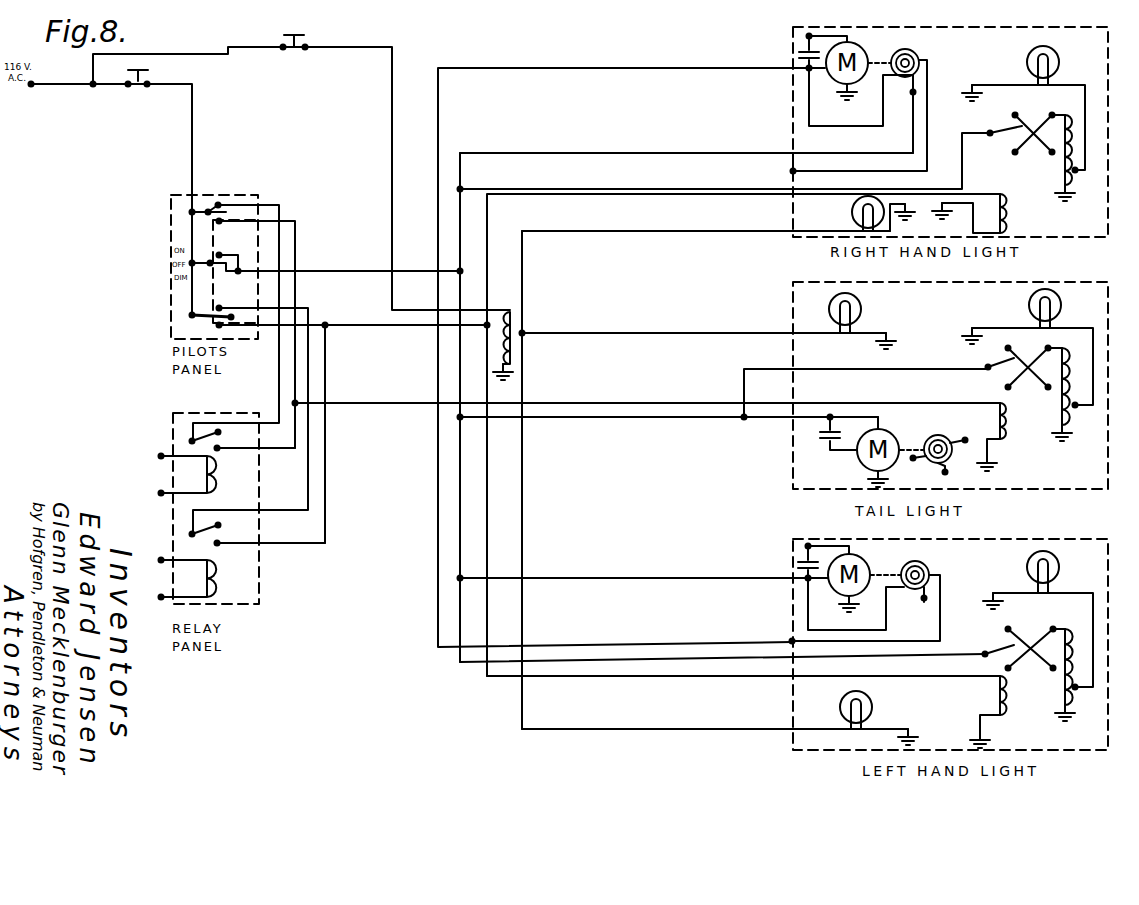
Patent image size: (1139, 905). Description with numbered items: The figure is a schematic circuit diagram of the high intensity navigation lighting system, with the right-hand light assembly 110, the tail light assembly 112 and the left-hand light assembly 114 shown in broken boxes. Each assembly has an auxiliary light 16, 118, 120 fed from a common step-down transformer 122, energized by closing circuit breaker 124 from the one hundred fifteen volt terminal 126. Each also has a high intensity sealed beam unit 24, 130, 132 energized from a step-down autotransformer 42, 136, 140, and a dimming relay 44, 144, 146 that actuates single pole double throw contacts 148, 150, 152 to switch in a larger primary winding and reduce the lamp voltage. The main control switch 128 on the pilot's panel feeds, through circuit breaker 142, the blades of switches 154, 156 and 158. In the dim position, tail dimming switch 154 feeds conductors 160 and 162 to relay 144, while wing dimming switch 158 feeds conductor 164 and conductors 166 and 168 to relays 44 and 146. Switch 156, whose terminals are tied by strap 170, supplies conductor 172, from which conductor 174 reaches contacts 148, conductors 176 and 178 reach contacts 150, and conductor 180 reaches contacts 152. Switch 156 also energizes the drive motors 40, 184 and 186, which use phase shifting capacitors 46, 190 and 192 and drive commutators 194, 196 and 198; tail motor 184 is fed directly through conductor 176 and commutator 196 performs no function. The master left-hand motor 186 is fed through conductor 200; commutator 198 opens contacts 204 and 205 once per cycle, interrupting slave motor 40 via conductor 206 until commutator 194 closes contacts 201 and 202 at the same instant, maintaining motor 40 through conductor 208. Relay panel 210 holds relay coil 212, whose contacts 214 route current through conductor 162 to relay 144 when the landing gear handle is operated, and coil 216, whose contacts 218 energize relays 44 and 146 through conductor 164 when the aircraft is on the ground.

The auxiliary light 16 is at (854, 204).
The high intensity sealed beam unit 24 is at (1052, 50).
The drive motor 40 is at (869, 50).
The step down autotransformer 42 is at (1080, 112).
The dimming relay 44 is at (1012, 196).
The phase shifting capacitor 46 is at (797, 48).
The right-hand light assembly 110 is at (935, 27).
The tail light assembly 112 is at (1000, 282).
The left-hand light assembly 114 is at (1025, 539).
The auxiliary light 118 is at (828, 318).
The auxiliary light 120 is at (838, 703).
The step-down transformer 122 is at (511, 309).
The circuit breaker 124 is at (316, 43).
The terminal 126 is at (31, 92).
The main control switch 128 is at (210, 195).
The high intensity sealed beam unit 130 is at (1028, 312).
The high intensity sealed beam unit 132 is at (1058, 575).
The step down autotransformer 136 is at (1082, 335).
The step down autotransformer 140 is at (1082, 616).
The circuit breaker 142 is at (135, 92).
The dimming relay 144 is at (1009, 437).
The dimming relay 146 is at (1005, 692).
The single pole double throw contacts 148 is at (1010, 134).
The single pole double throw contacts 150 is at (996, 371).
The single pole double throw contacts 152 is at (990, 646).
The tail dimming switch 154 is at (225, 202).
The center switch 156 is at (238, 244).
The wing dimming switch 158 is at (240, 295).
The conductor 160 is at (297, 292).
The conductor 162 is at (625, 399).
The conductor 164 is at (372, 334).
The conductor 166 is at (577, 210).
The conductor 168 is at (583, 679).
The strap 170 is at (240, 262).
The conductor 172 is at (330, 270).
The conductor 174 is at (620, 188).
The conductor 176 is at (584, 420).
The conductor 178 is at (764, 368).
The conductor 180 is at (596, 659).
The drive motor 184 is at (889, 432).
The drive motor 186 is at (865, 558).
The phase shifting capacitor 190 is at (825, 445).
The phase shifting capacitor 192 is at (797, 572).
The commutator 194 is at (918, 52).
The commutator 196 is at (948, 435).
The commutator 198 is at (928, 563).
The conductor 200 is at (590, 575).
The contact 201 is at (888, 80).
The contact 202 is at (918, 78).
The contact 204 is at (935, 585).
The contact 205 is at (897, 592).
The conductor 206 is at (528, 66).
The conductor 208 is at (622, 152).
The relay panel 210 is at (259, 578).
The relay coil 212 is at (214, 478).
The normally open contacts 214 is at (222, 434).
The coil 216 is at (214, 582).
The contacts 218 is at (222, 528).